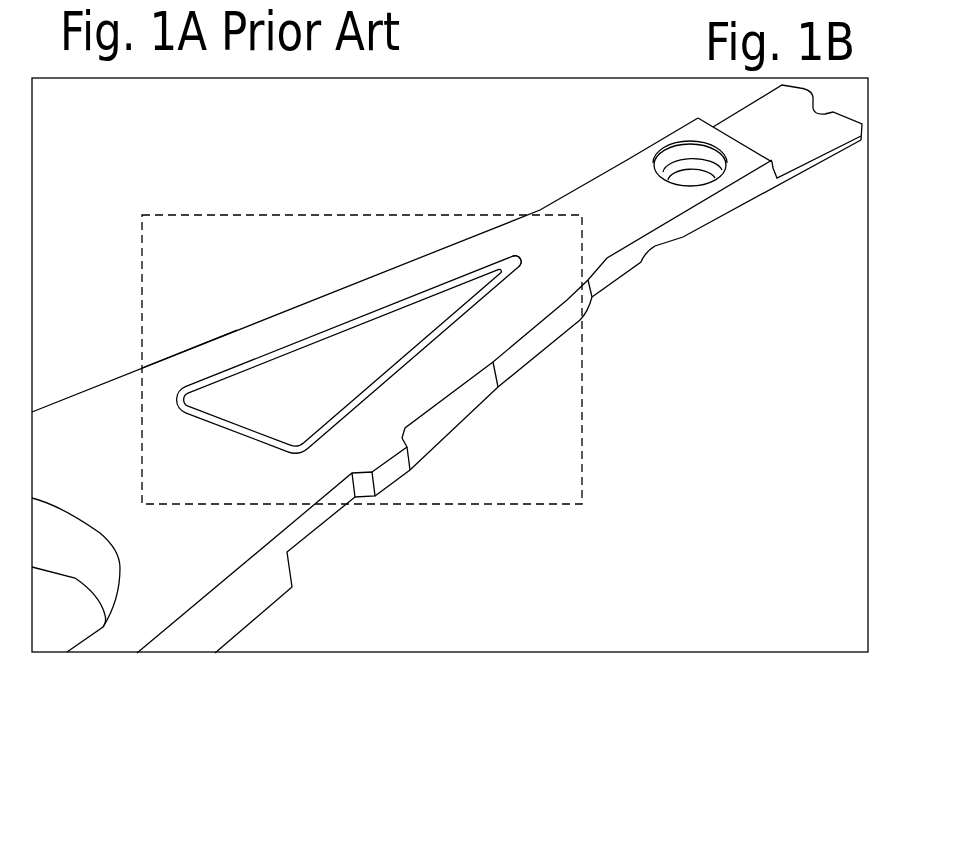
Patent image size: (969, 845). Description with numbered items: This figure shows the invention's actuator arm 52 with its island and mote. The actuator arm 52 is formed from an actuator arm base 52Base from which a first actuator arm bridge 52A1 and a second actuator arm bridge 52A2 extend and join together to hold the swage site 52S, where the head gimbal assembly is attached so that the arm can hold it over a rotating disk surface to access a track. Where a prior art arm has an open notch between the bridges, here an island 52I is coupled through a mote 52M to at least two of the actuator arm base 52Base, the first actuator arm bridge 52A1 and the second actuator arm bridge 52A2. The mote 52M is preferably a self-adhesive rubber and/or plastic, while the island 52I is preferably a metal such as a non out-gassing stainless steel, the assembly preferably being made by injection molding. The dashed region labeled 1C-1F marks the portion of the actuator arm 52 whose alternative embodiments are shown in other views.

The actuator arm 52 is at (868, 660).
The first actuator arm bridge 52A1 is at (352, 284).
The second actuator arm bridge 52A2 is at (457, 407).
The mote 52M is at (504, 284).
The swage site 52S is at (696, 181).
The island 52I is at (349, 354).
The actuator arm base 52Base is at (195, 407).
The region shown in FIGS. 1C-1F is at (582, 390).